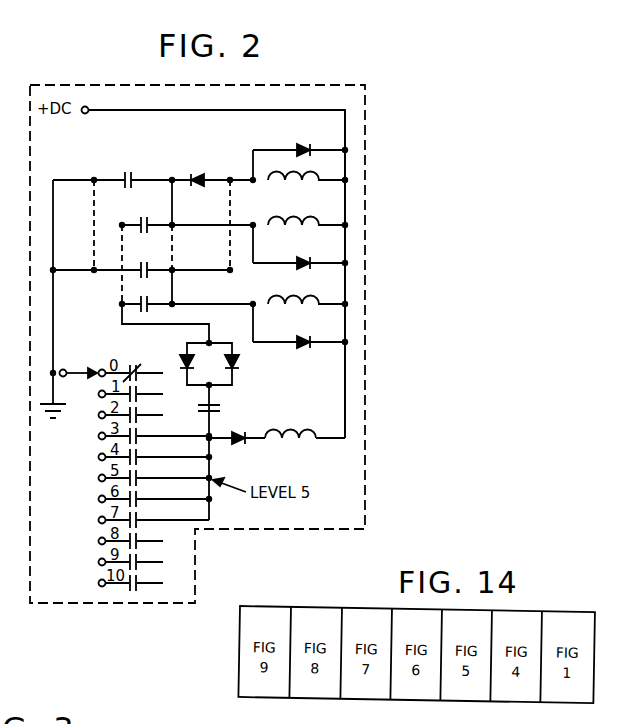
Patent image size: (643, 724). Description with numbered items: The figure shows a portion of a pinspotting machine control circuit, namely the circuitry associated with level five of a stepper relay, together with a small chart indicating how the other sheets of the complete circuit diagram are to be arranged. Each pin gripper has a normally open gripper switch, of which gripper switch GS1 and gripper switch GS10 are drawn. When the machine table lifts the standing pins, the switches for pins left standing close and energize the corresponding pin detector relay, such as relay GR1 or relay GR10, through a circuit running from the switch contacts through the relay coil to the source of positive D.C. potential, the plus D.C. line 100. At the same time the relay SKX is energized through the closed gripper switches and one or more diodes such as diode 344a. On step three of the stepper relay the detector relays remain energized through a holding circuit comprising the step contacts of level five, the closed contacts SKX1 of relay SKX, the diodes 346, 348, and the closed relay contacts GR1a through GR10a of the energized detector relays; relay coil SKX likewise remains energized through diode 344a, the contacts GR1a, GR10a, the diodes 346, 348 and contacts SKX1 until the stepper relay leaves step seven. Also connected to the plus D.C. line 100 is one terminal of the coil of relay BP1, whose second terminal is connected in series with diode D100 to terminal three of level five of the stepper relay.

The plus D.C. line 100 is at (345, 132).
The gripper switch GS1 is at (124, 171).
The diode 344a is at (199, 171).
The relay contacts GR1a is at (140, 221).
The gripper switch GS10 is at (140, 266).
The relay contacts GR10a is at (138, 305).
The relay SKX is at (285, 186).
The relay GR1 is at (288, 231).
The relay GR10 is at (296, 312).
The diode 346 is at (182, 367).
The diode 348 is at (238, 371).
The contacts SKX1 is at (218, 415).
The diode D100 is at (241, 452).
The relay BP1 is at (290, 447).